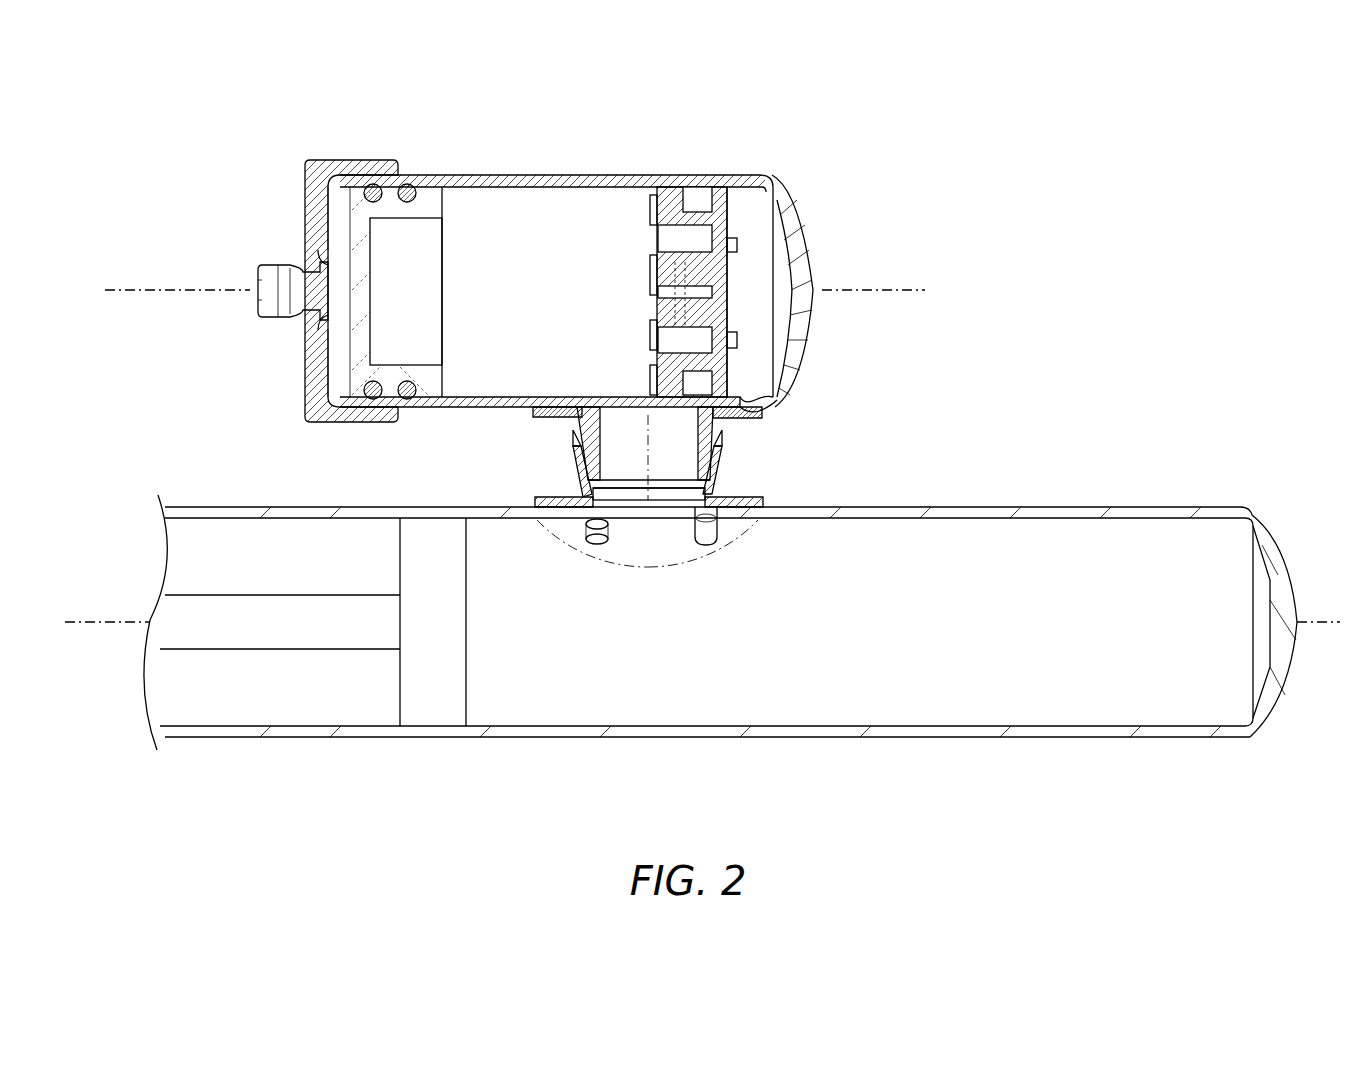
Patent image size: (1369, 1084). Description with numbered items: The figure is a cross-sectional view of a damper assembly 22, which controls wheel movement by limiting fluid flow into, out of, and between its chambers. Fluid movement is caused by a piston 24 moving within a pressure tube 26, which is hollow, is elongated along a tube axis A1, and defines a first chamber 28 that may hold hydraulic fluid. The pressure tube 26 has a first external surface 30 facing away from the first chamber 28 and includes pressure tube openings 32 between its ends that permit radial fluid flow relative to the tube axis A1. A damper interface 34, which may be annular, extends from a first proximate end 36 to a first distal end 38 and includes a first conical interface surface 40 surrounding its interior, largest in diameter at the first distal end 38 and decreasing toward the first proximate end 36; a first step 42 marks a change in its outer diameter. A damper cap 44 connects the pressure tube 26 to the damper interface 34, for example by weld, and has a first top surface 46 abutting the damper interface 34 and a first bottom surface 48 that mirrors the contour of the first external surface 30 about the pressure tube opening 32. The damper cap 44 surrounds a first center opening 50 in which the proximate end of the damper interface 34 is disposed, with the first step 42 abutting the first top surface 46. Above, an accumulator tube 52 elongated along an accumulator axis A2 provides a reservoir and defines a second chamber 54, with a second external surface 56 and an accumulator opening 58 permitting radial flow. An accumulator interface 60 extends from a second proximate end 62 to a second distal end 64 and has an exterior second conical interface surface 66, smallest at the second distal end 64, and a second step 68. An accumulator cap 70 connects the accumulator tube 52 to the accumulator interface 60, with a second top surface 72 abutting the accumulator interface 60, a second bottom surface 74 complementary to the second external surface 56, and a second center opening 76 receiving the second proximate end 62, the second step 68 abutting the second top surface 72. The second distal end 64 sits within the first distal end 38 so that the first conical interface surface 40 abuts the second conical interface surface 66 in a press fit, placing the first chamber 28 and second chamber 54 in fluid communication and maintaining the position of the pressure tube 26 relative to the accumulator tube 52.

The damper assembly 22 is at (1070, 242).
The piston 24 is at (437, 708).
The pressure tube 26 is at (905, 740).
The first chamber 28 is at (1008, 552).
The first external surface 30 is at (895, 506).
The pressure tube opening 32 is at (592, 546).
The damper interface 34 is at (720, 468).
The first proximate end 36 is at (713, 500).
The first distal end 38 is at (722, 445).
The first conical interface surface 40 is at (702, 466).
The first step 42 is at (582, 490).
The damper cap 44 is at (546, 510).
The first top surface 46 is at (765, 500).
The first bottom surface 48 is at (750, 510).
The first center opening 50 is at (632, 496).
The accumulator tube 52 is at (582, 175).
The second chamber 54 is at (747, 212).
The second external surface 56 is at (463, 408).
The accumulator opening 58 is at (758, 395).
The accumulator interface 60 is at (700, 448).
The second proximate end 62 is at (735, 395).
The second distal end 64 is at (596, 470).
The second conical interface surface 66 is at (577, 455).
The second step 68 is at (574, 430).
The accumulator cap 70 is at (765, 412).
The second top surface 72 is at (540, 416).
The second bottom surface 74 is at (537, 396).
The second center opening 76 is at (630, 428).
The tube axis A1 is at (84, 622).
The accumulator axis A2 is at (141, 290).